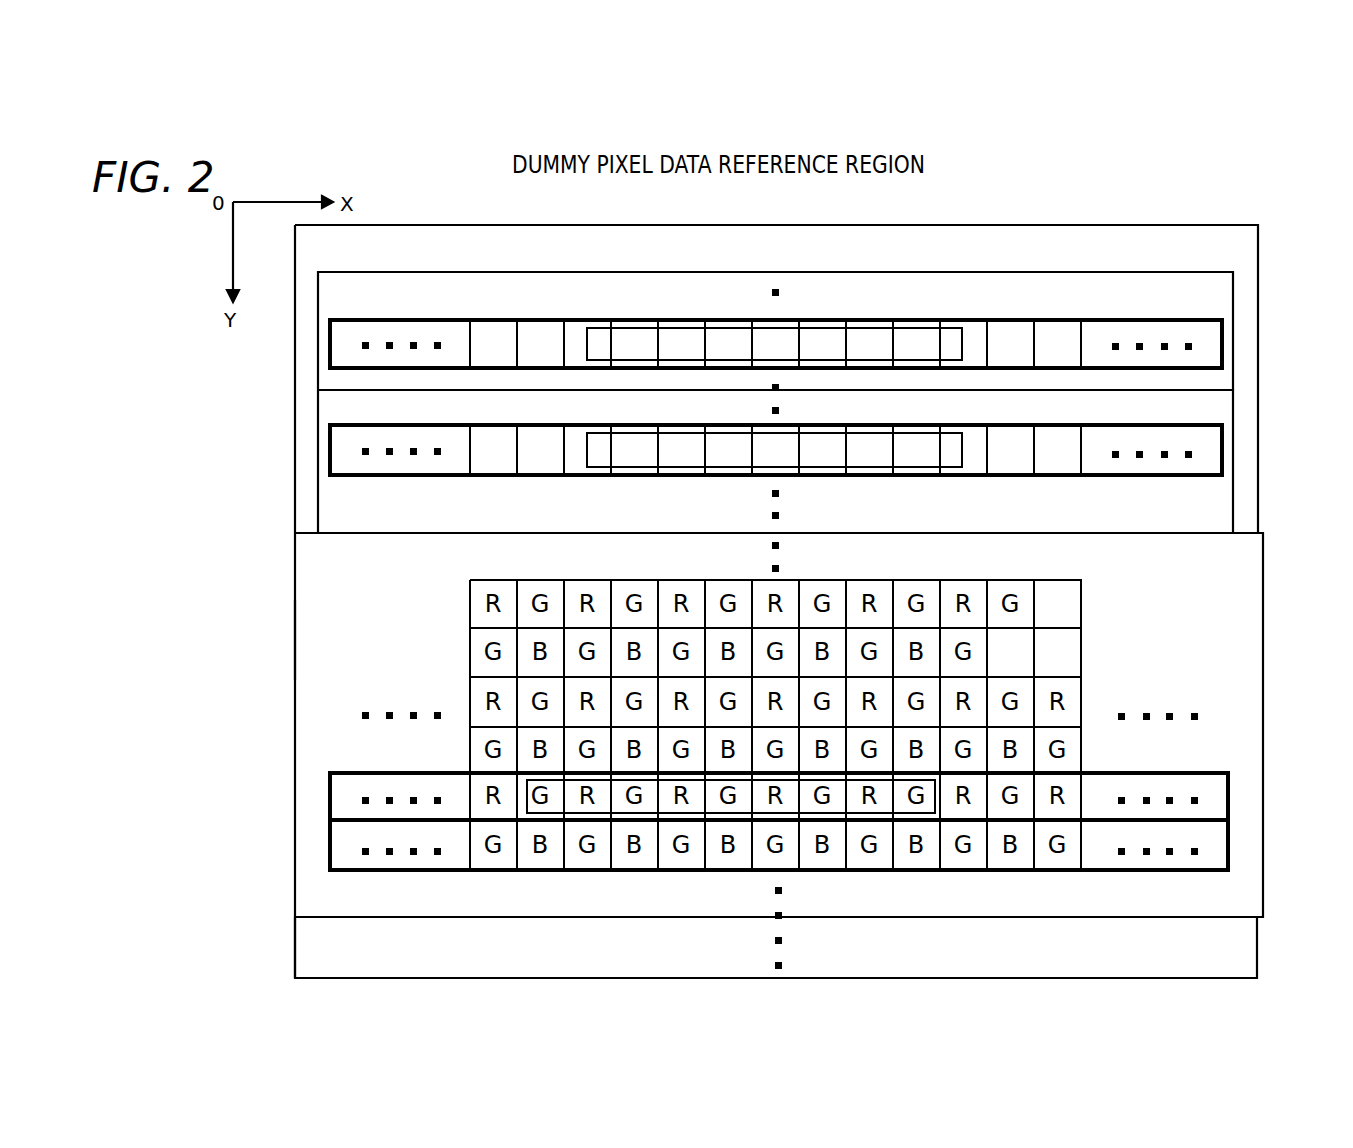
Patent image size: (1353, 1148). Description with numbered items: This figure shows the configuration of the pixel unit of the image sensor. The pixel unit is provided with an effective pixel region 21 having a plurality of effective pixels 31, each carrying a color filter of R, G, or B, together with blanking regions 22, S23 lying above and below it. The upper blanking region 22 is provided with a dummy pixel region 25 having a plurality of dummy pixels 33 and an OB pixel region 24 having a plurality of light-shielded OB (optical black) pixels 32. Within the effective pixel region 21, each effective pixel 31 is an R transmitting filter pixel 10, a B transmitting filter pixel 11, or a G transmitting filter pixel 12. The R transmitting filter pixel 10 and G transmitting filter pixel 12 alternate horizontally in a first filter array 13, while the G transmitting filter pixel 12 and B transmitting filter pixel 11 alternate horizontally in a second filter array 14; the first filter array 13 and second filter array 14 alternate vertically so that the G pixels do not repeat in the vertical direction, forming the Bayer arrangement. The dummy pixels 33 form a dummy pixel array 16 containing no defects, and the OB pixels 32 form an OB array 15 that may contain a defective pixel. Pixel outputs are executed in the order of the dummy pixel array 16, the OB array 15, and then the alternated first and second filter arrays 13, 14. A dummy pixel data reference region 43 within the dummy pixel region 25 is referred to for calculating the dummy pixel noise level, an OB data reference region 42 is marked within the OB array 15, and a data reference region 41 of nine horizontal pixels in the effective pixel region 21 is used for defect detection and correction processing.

The R transmitting filter pixel 10 is at (1090, 608).
The B transmitting filter pixel 11 is at (1025, 607).
The G transmitting filter pixel 12 is at (1090, 654).
The first filter array 13 is at (830, 821).
The second filter array 14 is at (830, 871).
The OB array 15 is at (827, 473).
The dummy pixel array 16 is at (827, 370).
The effective pixel region 21 is at (748, 716).
The blanking region 22 is at (776, 578).
The blanking region (lower) S23 is at (738, 940).
The OB pixel region 24 is at (742, 323).
The dummy pixel region 25 is at (742, 450).
The effective pixel 31 is at (254, 638).
The OB pixel 32 is at (1017, 326).
The dummy pixel 33 is at (1068, 273).
The data reference region 41 is at (622, 690).
The OB data reference region 42 is at (748, 468).
The dummy pixel data reference region 43 is at (774, 269).